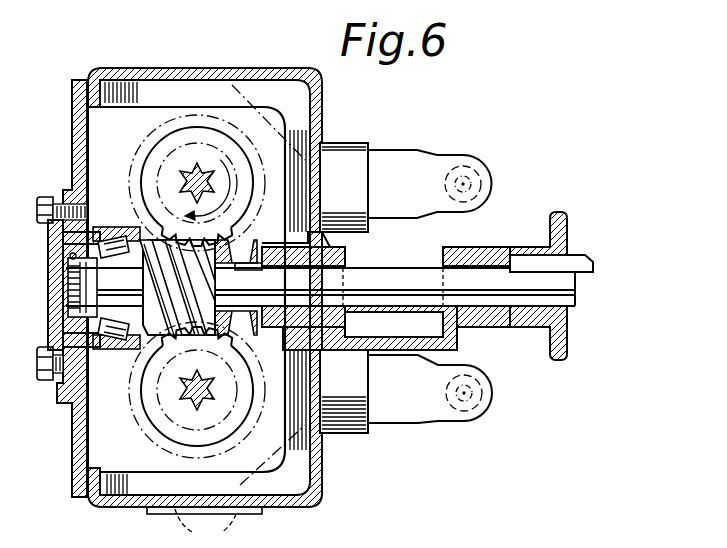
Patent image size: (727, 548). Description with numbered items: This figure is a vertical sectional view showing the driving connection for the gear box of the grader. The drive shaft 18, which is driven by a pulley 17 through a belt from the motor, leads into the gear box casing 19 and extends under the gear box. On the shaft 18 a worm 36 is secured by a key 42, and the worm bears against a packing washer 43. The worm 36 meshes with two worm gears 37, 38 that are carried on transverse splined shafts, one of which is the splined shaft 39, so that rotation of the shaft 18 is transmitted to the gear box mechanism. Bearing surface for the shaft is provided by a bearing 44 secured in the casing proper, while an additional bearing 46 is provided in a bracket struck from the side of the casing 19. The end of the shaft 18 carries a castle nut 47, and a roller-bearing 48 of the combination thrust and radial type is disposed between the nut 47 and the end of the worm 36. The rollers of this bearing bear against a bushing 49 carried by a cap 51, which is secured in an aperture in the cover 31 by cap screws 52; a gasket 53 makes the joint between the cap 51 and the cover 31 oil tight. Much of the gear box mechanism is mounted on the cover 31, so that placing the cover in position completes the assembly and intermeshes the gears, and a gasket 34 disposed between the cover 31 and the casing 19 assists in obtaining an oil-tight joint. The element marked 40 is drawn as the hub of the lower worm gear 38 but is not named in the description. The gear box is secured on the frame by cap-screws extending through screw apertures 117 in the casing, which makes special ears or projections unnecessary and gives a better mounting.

The pulley 17 is at (567, 242).
The shaft 18 is at (412, 272).
The gear box casing 19 is at (322, 475).
The cover 31 is at (73, 97).
The gasket 34 is at (88, 78).
The worm 36 is at (143, 335).
The worm gear 37 is at (172, 148).
The worm gear 38 is at (172, 420).
The splined shaft 39 is at (203, 173).
The lower hub spline 40 is at (208, 392).
The key 42 is at (236, 268).
The packing washer 43 is at (262, 266).
The bearing 44 is at (343, 265).
The bearing 46 is at (488, 257).
The castle nut 47 is at (70, 298).
The roller-bearing 48 is at (130, 248).
The bushing 49 is at (97, 228).
The cap 51 is at (56, 266).
The cap screws 52 is at (64, 213).
The gasket 53 is at (65, 200).
The screw apertures 117 is at (204, 527).